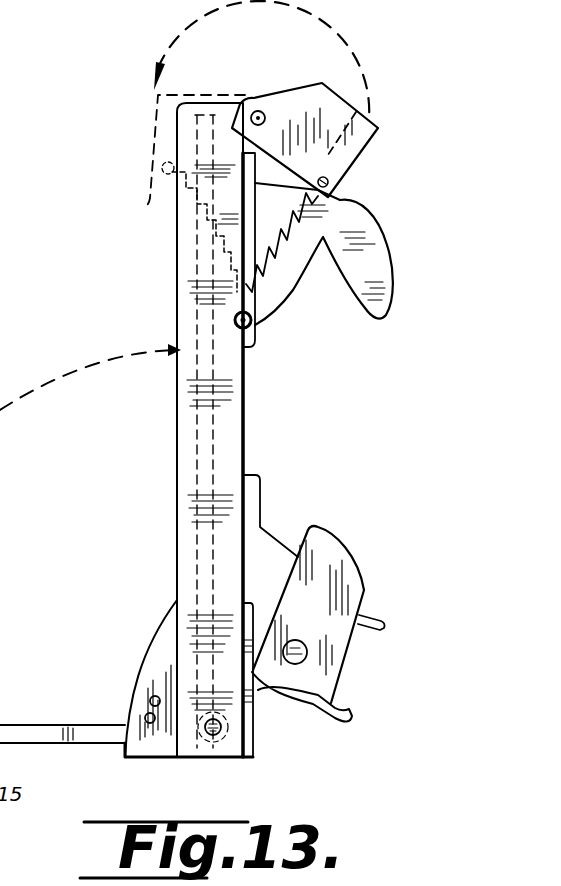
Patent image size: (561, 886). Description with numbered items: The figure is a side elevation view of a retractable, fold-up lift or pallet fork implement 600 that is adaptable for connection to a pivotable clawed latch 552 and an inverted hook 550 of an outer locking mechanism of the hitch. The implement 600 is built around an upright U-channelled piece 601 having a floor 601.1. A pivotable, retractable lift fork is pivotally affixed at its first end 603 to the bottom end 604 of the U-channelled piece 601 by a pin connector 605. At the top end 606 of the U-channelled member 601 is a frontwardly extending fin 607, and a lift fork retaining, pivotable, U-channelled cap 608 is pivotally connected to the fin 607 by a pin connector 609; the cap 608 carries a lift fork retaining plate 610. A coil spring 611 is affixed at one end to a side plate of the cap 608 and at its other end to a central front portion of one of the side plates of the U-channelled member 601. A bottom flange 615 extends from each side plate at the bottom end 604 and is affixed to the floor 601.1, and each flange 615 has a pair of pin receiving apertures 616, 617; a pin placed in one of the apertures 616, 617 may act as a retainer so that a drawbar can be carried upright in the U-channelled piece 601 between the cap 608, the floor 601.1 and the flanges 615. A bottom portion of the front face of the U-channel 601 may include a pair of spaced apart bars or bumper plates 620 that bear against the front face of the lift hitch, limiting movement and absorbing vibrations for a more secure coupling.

The lift fork implement 600 is at (160, 465).
The upright U-channelled piece 601 is at (184, 442).
The floor 601.1 is at (194, 755).
The first end 603 is at (95, 737).
The bottom end 604 is at (252, 711).
The pin connector 605 is at (213, 736).
The top end 606 is at (190, 278).
The frontwardly extending fin 607 is at (244, 146).
The U-channelled cap 608 is at (330, 120).
The pin connector 609 is at (265, 112).
The lift fork retaining plate 610 is at (146, 208).
The coil spring 611 is at (347, 203).
The inverted hook 550 is at (373, 263).
The pivotable clawed latch 552 is at (330, 660).
The bottom flange 615 is at (177, 642).
The pin receiving aperture 616 is at (145, 716).
The pin receiving aperture 617 is at (151, 698).
The bumper plates 620 is at (317, 725).